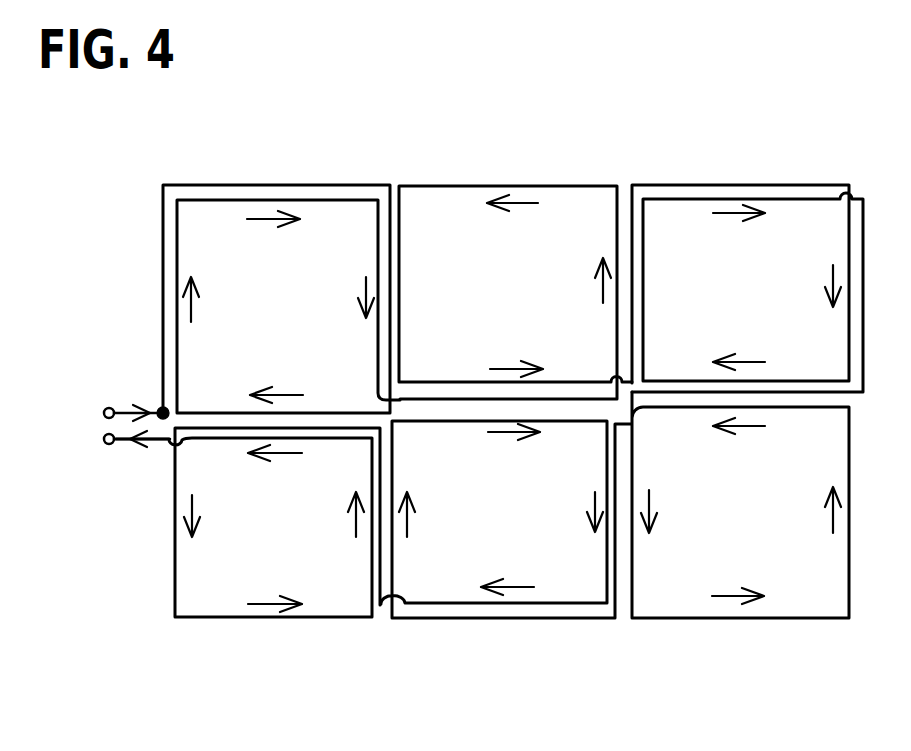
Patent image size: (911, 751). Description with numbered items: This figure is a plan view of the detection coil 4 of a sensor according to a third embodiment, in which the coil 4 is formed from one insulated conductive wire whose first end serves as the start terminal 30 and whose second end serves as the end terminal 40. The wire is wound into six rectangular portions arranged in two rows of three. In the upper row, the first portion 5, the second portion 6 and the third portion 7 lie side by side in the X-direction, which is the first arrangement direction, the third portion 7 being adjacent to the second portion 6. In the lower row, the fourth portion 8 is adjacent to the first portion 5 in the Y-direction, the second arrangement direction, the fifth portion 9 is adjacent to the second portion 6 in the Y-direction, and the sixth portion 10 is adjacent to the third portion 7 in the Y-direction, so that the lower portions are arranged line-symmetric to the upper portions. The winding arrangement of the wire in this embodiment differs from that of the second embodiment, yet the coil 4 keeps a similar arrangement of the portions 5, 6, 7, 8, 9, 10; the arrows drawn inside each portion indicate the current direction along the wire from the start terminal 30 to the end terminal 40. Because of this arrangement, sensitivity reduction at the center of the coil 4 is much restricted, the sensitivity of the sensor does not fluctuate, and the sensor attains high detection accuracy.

The detection coil 4 is at (552, 657).
The first portion 5 is at (293, 181).
The second portion 6 is at (504, 182).
The third portion 7 is at (730, 181).
The fourth portion 8 is at (267, 626).
The fifth portion 9 is at (460, 626).
The sixth portion 10 is at (683, 626).
The start terminal 30 is at (114, 412).
The end terminal 40 is at (115, 445).